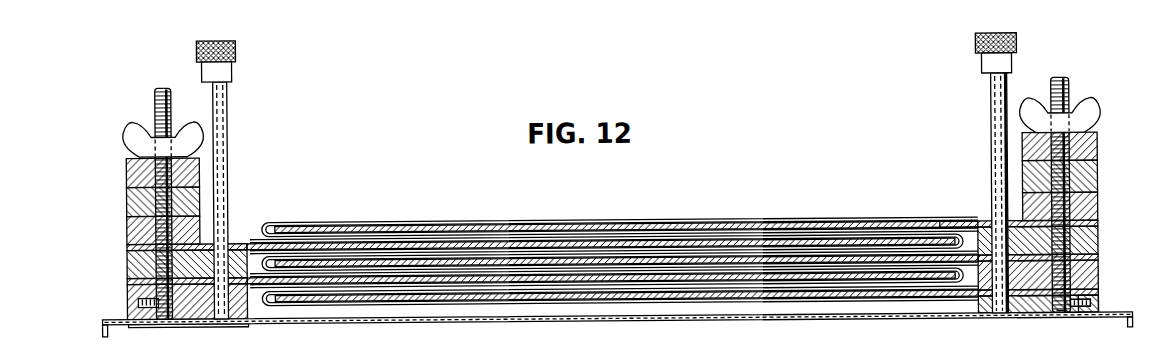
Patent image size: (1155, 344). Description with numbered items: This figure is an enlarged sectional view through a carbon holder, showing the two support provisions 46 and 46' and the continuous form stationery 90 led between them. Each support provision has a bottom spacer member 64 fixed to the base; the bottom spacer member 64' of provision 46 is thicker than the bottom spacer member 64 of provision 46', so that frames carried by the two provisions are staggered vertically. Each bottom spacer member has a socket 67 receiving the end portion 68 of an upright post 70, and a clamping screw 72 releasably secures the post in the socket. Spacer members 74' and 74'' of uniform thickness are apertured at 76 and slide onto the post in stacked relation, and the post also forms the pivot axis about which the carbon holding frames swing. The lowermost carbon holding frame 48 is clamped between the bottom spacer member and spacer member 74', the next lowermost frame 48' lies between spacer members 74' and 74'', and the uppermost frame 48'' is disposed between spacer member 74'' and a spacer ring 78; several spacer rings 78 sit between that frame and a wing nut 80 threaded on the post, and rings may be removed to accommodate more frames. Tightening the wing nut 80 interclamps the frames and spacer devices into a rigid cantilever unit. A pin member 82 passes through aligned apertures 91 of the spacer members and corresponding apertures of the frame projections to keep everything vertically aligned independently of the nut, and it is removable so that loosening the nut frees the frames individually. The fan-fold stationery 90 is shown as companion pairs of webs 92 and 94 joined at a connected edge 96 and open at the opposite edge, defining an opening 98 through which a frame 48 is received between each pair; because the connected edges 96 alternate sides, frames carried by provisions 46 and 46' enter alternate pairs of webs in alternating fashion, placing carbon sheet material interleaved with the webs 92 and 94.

The support provision 46 is at (234, 85).
The support provision 46' is at (951, 67).
The carbon holding frame 48 is at (613, 290).
The next lowermost carbon holding frame 48' is at (627, 227).
The uppermost carbon holding frame 48'' is at (685, 200).
The bottom spacer member 64 is at (1057, 300).
The bottom spacer member 64' is at (160, 289).
The socket 67 is at (1056, 305).
The end portion 68 is at (1068, 313).
The post 70 is at (154, 96).
The clamping screw 72 is at (1088, 314).
The spacer member 74' is at (1059, 257).
The spacer member 74'' is at (1059, 239).
The aperture 76 is at (1094, 285).
The spacer ring 78 is at (127, 226).
The wing nut 80 is at (130, 124).
The pin member 82 is at (229, 152).
The continuous form stationery 90 is at (391, 238).
The aperture 91 is at (990, 226).
The web 92 is at (322, 221).
The web 94 is at (293, 234).
The connected edge 96 is at (264, 222).
The opening 98 is at (966, 210).